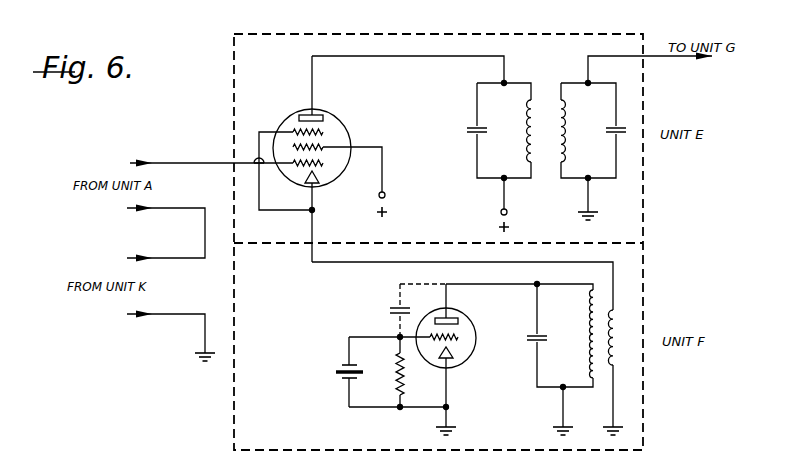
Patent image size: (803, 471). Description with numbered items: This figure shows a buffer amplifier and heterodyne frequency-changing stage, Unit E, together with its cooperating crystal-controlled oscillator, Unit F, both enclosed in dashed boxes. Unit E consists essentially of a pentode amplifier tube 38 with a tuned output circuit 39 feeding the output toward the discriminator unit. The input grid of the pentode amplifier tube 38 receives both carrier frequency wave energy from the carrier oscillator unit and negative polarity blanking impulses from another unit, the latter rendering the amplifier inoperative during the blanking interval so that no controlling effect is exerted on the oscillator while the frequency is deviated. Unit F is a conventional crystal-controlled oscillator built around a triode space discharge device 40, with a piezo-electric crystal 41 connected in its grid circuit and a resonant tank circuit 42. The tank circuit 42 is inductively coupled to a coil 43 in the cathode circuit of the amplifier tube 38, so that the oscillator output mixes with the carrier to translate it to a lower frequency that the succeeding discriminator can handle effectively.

The pentode amplifier tube 38 is at (334, 121).
The tuned output circuit 39 is at (499, 157).
The triode space discharge device 40 is at (468, 318).
The piezo-electric crystal 41 is at (337, 372).
The resonant tank circuit 42 is at (560, 359).
The coil 43 is at (621, 372).